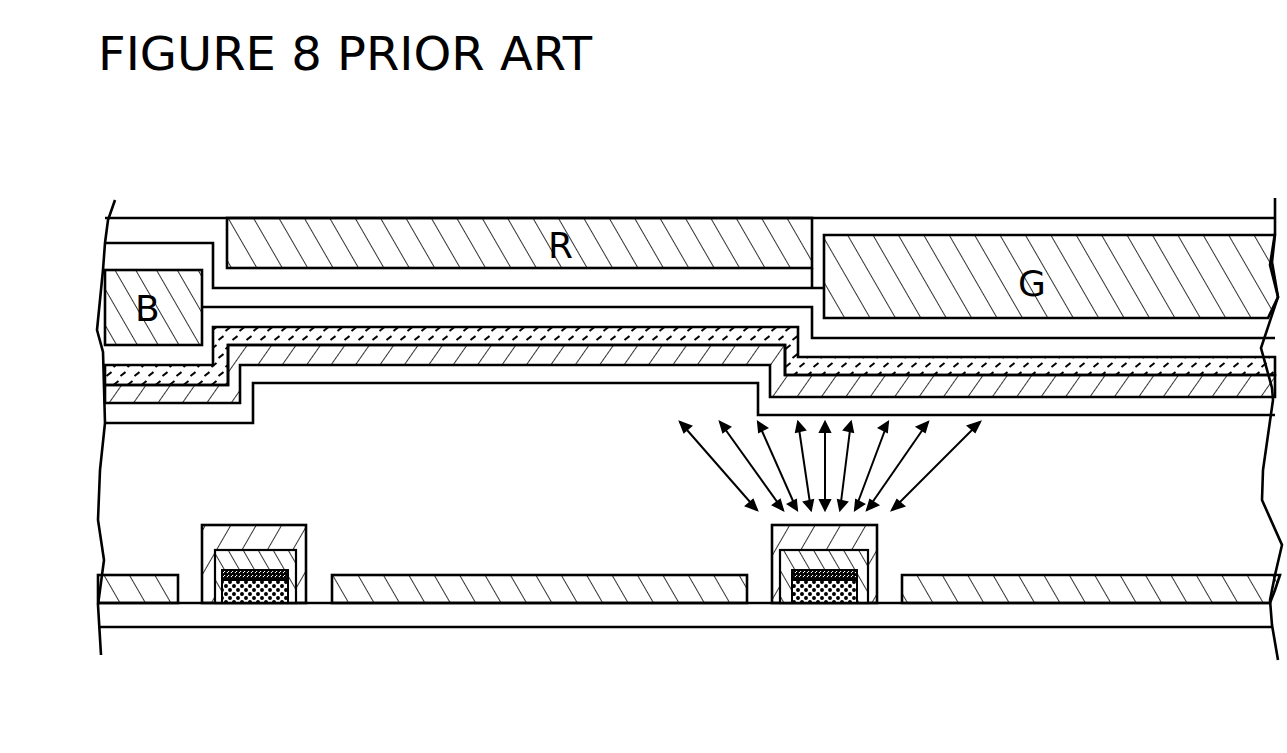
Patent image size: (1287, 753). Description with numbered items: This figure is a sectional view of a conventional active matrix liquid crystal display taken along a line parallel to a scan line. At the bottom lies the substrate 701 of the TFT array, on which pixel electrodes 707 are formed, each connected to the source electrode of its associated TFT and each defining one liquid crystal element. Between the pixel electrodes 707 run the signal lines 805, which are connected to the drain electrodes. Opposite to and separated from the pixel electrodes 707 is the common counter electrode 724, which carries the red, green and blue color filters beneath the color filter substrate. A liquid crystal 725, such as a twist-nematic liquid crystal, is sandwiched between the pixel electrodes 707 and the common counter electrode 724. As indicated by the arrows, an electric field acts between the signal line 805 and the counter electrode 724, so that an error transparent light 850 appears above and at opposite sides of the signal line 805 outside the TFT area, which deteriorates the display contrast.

The common counter electrode 724 is at (370, 358).
The liquid crystal 725 is at (1085, 477).
The error transparent light 850 is at (1028, 213).
The pixel electrode 707 is at (635, 592).
The signal line 805 is at (273, 532).
The substrate 701 is at (654, 732).